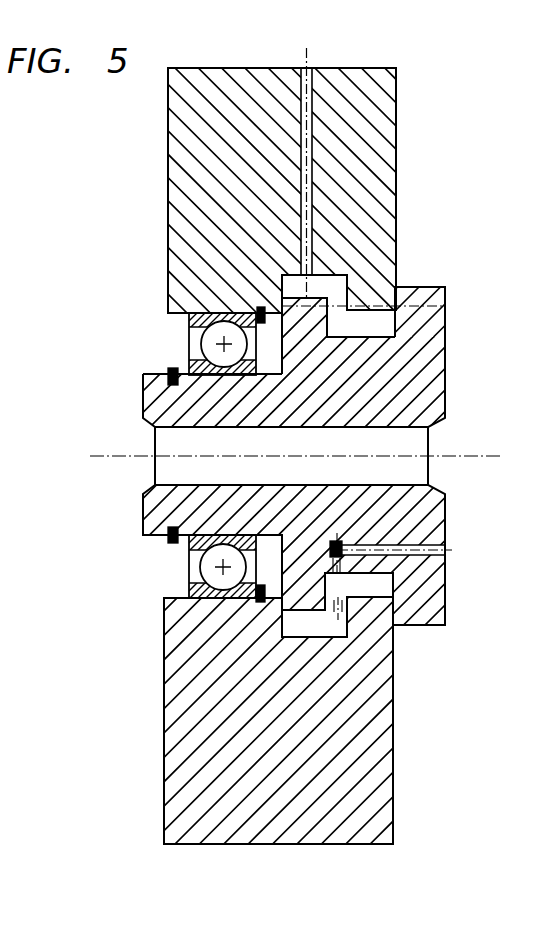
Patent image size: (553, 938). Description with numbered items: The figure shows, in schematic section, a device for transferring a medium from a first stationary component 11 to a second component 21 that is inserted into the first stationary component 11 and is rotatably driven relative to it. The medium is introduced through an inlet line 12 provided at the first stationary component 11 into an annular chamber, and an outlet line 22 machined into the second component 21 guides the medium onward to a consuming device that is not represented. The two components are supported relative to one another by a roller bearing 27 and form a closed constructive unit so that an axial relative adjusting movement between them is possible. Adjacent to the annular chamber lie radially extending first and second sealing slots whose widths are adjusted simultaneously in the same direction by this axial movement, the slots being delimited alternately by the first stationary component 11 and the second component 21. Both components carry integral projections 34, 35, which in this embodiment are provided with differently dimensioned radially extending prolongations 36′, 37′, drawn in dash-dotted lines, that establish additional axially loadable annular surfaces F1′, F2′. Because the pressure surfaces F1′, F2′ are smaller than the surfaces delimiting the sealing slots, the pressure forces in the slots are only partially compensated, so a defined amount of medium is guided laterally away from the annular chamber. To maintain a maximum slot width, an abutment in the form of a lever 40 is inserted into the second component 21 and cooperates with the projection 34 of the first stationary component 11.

The first stationary component 11 is at (398, 88).
The inlet line 12 is at (311, 90).
The second component 21 is at (447, 528).
The outlet line 22 is at (452, 553).
The roller bearing 27 is at (188, 557).
The projection 34 is at (398, 262).
The projection 35 is at (286, 327).
The prolongation 36′ is at (445, 308).
The prolongation 37′ is at (336, 296).
The lever 40 is at (339, 614).
The annular surface F1′ is at (349, 305).
The annular surface F2′ is at (338, 270).